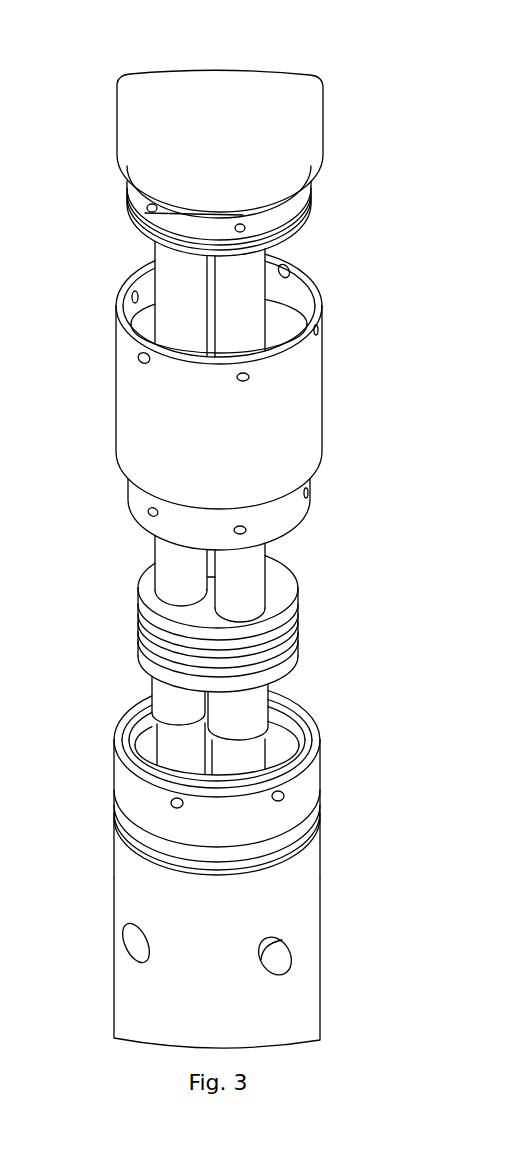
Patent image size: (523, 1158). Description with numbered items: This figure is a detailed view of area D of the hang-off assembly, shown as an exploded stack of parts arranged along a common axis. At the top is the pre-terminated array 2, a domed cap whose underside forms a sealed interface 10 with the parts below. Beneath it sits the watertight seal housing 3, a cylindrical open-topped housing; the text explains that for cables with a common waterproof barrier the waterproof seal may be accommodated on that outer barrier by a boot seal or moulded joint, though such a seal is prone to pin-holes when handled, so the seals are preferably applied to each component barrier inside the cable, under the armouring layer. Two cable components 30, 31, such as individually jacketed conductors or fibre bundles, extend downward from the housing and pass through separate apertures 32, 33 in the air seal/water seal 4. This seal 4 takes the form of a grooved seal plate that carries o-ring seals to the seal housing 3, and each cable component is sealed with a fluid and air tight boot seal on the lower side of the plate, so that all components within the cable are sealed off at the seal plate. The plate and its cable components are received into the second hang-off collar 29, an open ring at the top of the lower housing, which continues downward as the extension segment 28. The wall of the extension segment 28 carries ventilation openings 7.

The pre-terminated array 2 is at (317, 118).
The sealed interface 10 is at (310, 200).
The watertight seal housing 3 is at (312, 356).
The cable component 31 is at (173, 560).
The cable component 30 is at (258, 560).
The aperture 32 is at (160, 603).
The aperture 33 is at (255, 622).
The air seal/water seal 4 is at (300, 605).
The second hang-off collar 29 is at (320, 805).
The extension segment 28 is at (320, 917).
The ventilation openings 7 is at (285, 953).